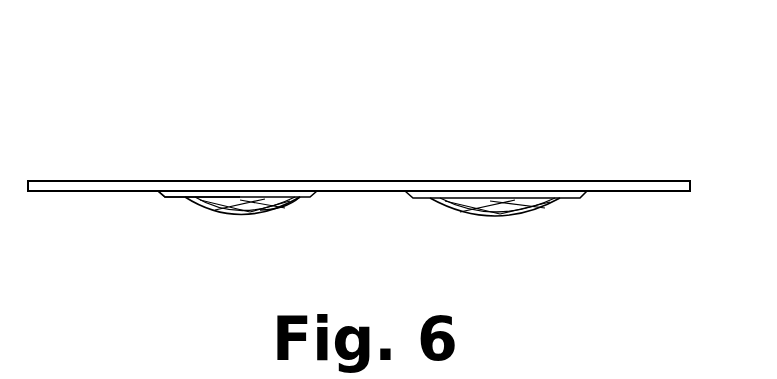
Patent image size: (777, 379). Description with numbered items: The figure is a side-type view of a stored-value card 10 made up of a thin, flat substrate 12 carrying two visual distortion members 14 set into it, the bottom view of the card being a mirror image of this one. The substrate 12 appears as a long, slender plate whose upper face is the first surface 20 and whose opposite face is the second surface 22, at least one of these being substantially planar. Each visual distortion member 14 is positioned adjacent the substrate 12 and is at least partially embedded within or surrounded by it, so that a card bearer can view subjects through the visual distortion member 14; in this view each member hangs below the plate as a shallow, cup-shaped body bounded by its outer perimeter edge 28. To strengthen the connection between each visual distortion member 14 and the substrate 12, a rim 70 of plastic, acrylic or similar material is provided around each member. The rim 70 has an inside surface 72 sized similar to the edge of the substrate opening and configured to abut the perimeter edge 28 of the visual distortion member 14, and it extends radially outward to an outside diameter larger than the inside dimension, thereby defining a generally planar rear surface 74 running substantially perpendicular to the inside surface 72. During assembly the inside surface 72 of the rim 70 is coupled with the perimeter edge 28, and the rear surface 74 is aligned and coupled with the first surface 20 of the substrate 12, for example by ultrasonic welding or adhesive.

The stored-value card 10 is at (607, 93).
The substrate 12 is at (640, 181).
The visual distortion member 14 is at (230, 217).
The first surface 20 is at (620, 193).
The second surface 22 is at (383, 181).
The perimeter edge 28 is at (553, 200).
The rim 70 is at (168, 198).
The inside surface 72 is at (305, 203).
The rear surface 74 is at (527, 190).